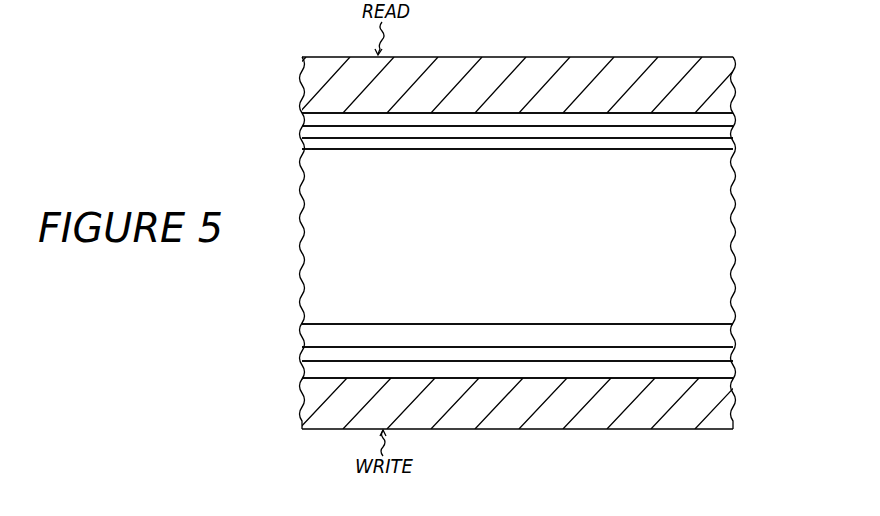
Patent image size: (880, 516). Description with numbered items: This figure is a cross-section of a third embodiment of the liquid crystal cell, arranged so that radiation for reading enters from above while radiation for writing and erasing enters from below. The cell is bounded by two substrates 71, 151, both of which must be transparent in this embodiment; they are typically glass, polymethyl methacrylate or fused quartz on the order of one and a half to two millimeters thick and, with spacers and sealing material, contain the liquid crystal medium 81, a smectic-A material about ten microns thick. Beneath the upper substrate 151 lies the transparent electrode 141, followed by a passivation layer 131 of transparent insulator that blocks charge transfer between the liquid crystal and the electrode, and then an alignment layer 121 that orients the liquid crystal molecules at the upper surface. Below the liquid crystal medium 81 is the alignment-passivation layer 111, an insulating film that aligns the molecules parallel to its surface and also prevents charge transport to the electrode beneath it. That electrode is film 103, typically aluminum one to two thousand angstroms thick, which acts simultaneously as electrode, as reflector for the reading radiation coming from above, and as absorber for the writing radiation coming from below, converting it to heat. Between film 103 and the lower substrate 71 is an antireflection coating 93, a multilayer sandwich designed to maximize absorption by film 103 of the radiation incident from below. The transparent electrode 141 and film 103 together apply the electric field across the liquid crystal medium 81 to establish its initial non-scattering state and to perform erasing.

The substrate 151 is at (735, 82).
The transparent electrode 141 is at (735, 115).
The passivation layer 131 is at (735, 128).
The alignment layer 121 is at (735, 150).
The liquid crystal medium 81 is at (735, 283).
The alignment-passivation layer 111 is at (735, 338).
The electrode, reflector, and absorber film 103 is at (735, 357).
The antireflection coating 93 is at (735, 373).
The substrate 71 is at (735, 405).